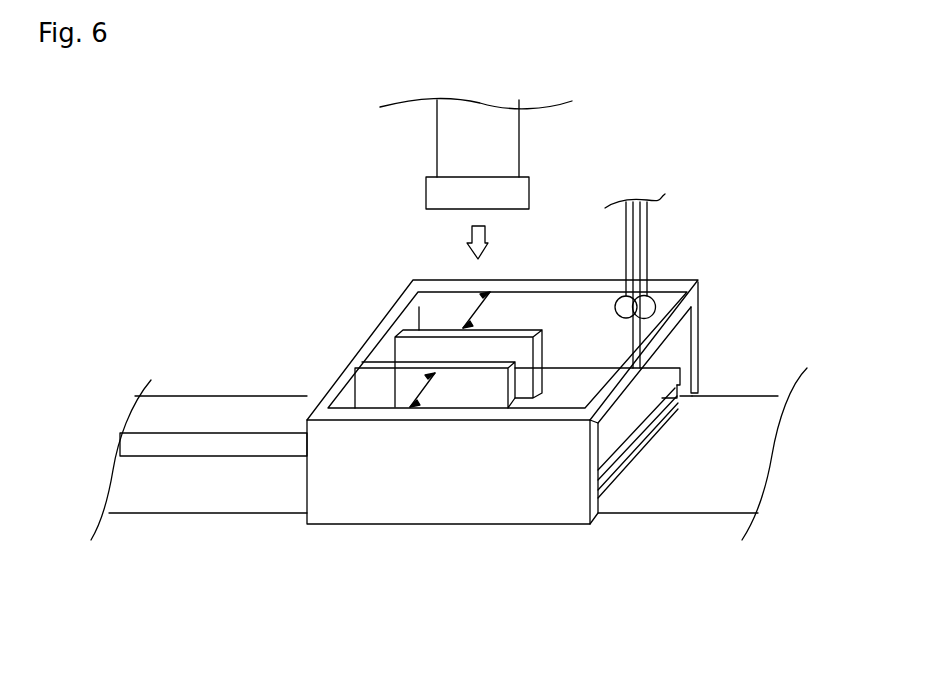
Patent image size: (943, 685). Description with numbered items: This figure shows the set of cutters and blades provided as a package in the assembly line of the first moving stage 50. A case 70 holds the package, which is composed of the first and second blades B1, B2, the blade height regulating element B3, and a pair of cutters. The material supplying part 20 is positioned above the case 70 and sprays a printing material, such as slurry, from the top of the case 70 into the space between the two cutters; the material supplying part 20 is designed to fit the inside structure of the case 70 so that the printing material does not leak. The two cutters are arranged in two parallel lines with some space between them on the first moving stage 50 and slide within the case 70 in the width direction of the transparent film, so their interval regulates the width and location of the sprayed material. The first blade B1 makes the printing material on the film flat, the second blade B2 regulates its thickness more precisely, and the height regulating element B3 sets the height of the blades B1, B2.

The material supplying part 20 is at (537, 142).
The first moving stage 50 is at (586, 547).
The case 70 is at (375, 502).
The first blade B1 is at (673, 408).
The second blade B2 is at (660, 377).
The blade height regulating element B3 is at (643, 303).